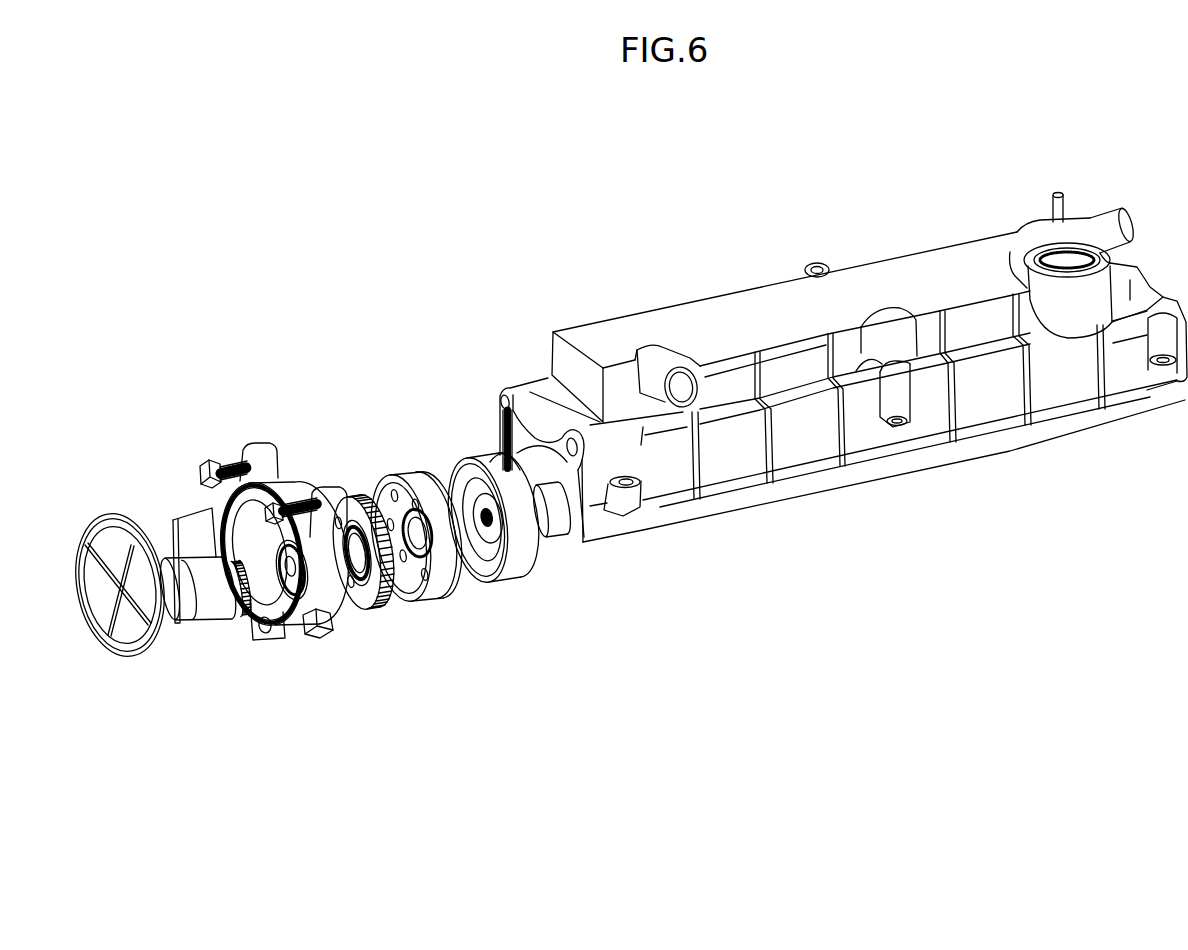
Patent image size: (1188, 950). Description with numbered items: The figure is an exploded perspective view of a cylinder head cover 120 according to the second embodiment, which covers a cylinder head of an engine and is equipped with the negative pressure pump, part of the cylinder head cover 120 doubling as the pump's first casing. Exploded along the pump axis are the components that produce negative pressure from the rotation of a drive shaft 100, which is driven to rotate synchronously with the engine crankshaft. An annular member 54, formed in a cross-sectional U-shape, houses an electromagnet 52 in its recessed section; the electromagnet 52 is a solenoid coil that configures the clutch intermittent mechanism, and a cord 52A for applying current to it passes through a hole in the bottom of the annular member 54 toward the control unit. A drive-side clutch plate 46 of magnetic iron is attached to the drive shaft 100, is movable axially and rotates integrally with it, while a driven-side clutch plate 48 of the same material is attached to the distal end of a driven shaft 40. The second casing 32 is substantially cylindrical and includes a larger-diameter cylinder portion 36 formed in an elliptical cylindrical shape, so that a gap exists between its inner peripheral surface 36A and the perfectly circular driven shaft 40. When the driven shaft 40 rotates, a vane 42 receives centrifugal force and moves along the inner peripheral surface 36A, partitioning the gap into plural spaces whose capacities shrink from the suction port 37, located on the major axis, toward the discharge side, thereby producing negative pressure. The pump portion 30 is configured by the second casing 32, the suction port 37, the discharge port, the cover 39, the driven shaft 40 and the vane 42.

The cylinder head cover 120 is at (858, 355).
The annular member 54 is at (517, 442).
The cord 52A is at (503, 438).
The electromagnet 52 is at (450, 478).
The drive shaft 100 is at (568, 548).
The drive-side clutch plate 46 is at (406, 491).
The driven-side clutch plate 48 is at (372, 592).
The second casing 32 is at (284, 489).
The pump portion 30 is at (284, 489).
The cylinder portion 36 is at (293, 471).
The inner peripheral surface 36A is at (202, 470).
The suction port 37 is at (327, 640).
The driven shaft 40 is at (206, 632).
The vane 42 is at (186, 510).
The cover 39 is at (108, 517).